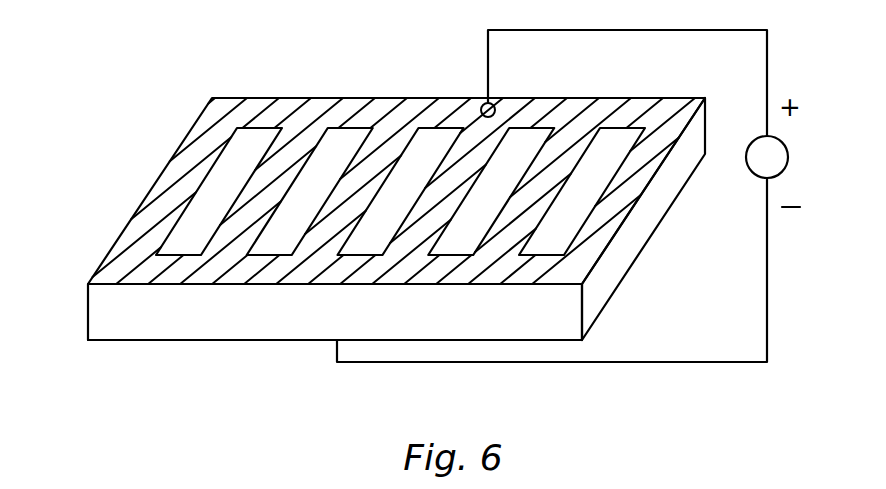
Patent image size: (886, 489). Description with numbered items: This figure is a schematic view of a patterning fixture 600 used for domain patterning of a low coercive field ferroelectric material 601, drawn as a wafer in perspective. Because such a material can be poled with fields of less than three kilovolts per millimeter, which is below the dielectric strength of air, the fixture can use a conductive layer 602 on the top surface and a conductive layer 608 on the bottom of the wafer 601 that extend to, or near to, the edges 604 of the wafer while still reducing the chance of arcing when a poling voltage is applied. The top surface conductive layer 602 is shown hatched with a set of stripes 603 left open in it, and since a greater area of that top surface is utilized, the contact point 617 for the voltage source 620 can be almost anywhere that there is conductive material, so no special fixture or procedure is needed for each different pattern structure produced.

The patterning fixture 600 is at (165, 76).
The low coercive field ferroelectric material 601 is at (88, 313).
The conductive layer 602 is at (162, 186).
The electrode 603 is at (181, 249).
The edge 604 is at (153, 258).
The conductive layer 608 is at (260, 352).
The contact point 617 is at (482, 104).
The voltage source 620 is at (788, 158).